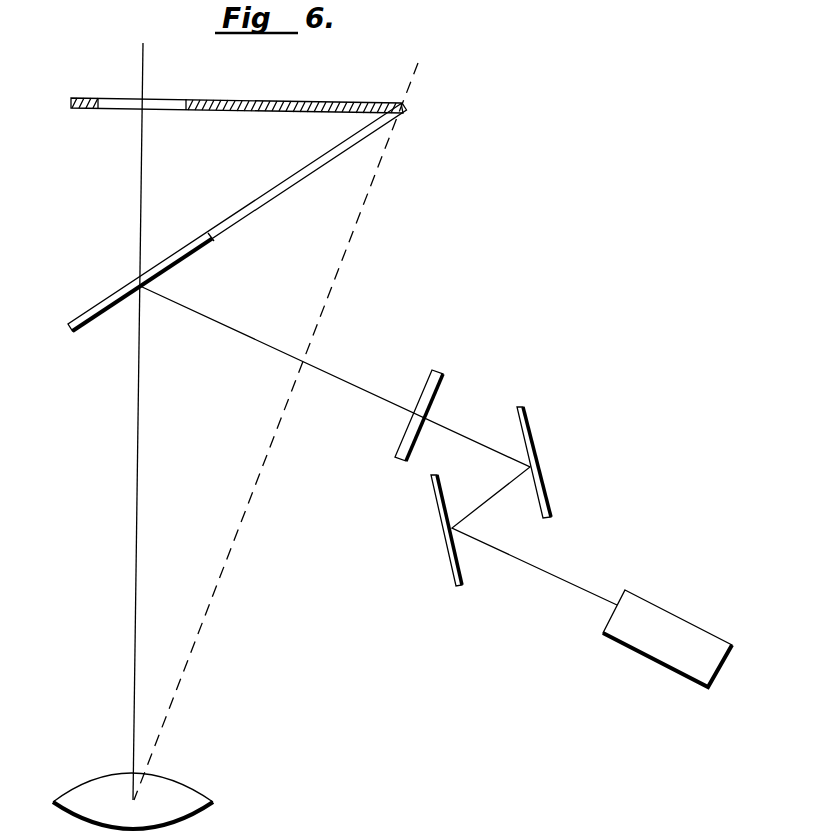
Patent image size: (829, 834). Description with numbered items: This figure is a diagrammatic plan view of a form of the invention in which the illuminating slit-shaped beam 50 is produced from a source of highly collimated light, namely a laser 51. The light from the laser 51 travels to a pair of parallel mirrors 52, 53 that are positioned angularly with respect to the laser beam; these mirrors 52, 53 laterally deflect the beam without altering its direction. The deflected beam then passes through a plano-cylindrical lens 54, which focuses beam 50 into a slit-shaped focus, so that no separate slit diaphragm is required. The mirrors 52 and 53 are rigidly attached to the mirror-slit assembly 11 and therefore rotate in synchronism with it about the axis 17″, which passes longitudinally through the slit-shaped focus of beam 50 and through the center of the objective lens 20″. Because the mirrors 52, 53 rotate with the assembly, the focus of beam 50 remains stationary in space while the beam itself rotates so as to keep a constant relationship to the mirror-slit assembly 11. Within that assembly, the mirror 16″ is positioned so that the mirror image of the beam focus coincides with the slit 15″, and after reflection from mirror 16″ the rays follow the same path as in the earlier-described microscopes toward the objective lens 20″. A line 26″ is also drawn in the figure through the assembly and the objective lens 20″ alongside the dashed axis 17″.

The mirror-slit assembly 11 is at (360, 83).
The slit 15 is at (184, 98).
The mirror 16 is at (101, 300).
The axis 17 is at (243, 521).
The objective lens 20 is at (214, 800).
The axis line 26 is at (143, 73).
The illuminating slit-shaped beam 50 is at (345, 381).
The laser 51 is at (668, 610).
The mirror 52 is at (448, 557).
The mirror 53 is at (545, 485).
The plano-cylindrical lens 54 is at (442, 372).